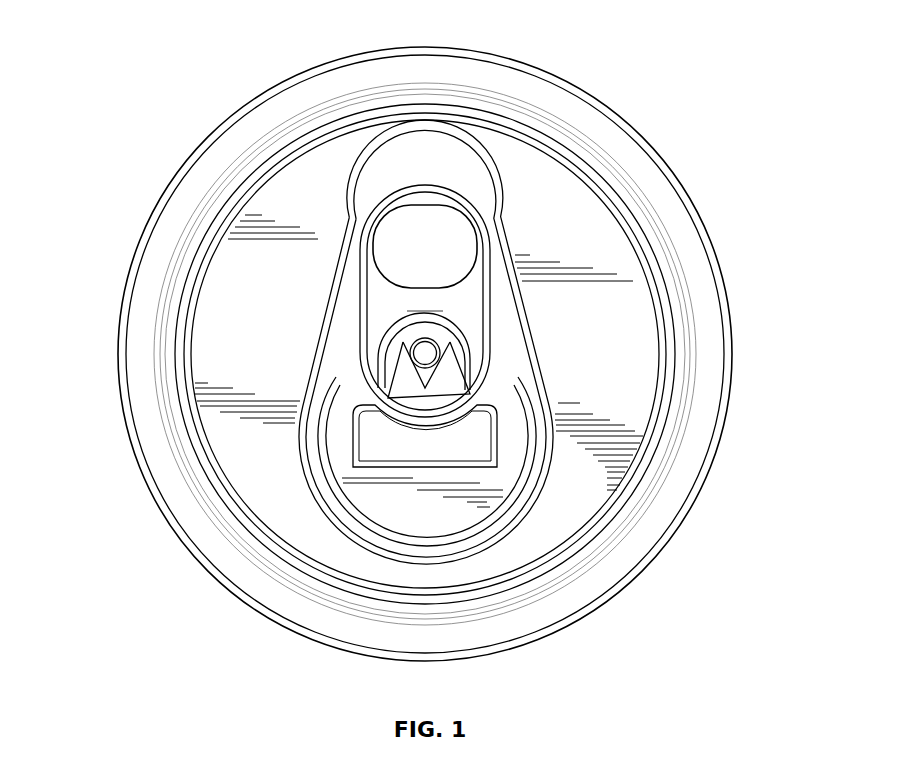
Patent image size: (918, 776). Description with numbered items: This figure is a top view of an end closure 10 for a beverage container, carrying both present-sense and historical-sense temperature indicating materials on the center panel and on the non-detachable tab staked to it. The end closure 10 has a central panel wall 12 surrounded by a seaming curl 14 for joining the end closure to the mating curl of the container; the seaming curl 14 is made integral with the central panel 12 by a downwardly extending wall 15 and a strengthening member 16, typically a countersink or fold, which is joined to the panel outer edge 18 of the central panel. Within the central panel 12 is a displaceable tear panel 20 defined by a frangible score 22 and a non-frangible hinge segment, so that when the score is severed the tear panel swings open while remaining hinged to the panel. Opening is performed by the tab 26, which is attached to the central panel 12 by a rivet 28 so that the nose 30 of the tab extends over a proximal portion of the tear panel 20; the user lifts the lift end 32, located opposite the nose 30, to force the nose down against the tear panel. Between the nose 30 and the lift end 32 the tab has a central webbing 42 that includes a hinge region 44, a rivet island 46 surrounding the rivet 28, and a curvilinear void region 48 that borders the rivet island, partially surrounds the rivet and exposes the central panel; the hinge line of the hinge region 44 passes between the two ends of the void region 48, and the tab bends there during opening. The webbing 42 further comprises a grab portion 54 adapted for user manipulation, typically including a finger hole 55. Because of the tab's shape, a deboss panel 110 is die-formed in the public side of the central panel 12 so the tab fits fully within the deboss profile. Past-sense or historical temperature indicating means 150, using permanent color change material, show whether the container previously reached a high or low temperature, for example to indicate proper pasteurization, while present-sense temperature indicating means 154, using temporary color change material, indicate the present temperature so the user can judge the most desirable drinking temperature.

The end closure 10 is at (139, 157).
The central panel wall 12 is at (190, 342).
The seaming curl 14 is at (737, 360).
The downwardly extending wall 15 is at (548, 135).
The strengthening member 16 is at (672, 322).
The panel outer edge 18 is at (577, 200).
The tear panel 20 is at (458, 515).
The frangible score 22 is at (526, 430).
The tab 26 is at (480, 203).
The rivet 28 is at (420, 360).
The nose 30 is at (423, 403).
The lift end 32 is at (455, 185).
The central webbing 42 is at (518, 290).
The hinge region 44 is at (440, 377).
The rivet island 46 is at (407, 457).
The void region 48 is at (440, 354).
The grab portion 54 is at (473, 303).
The finger hole 55 is at (409, 261).
The deboss panel 110 is at (374, 172).
The past-sense or historical temperature indicating means 150 is at (238, 307).
The present-sense temperature indicating means 154 is at (620, 313).